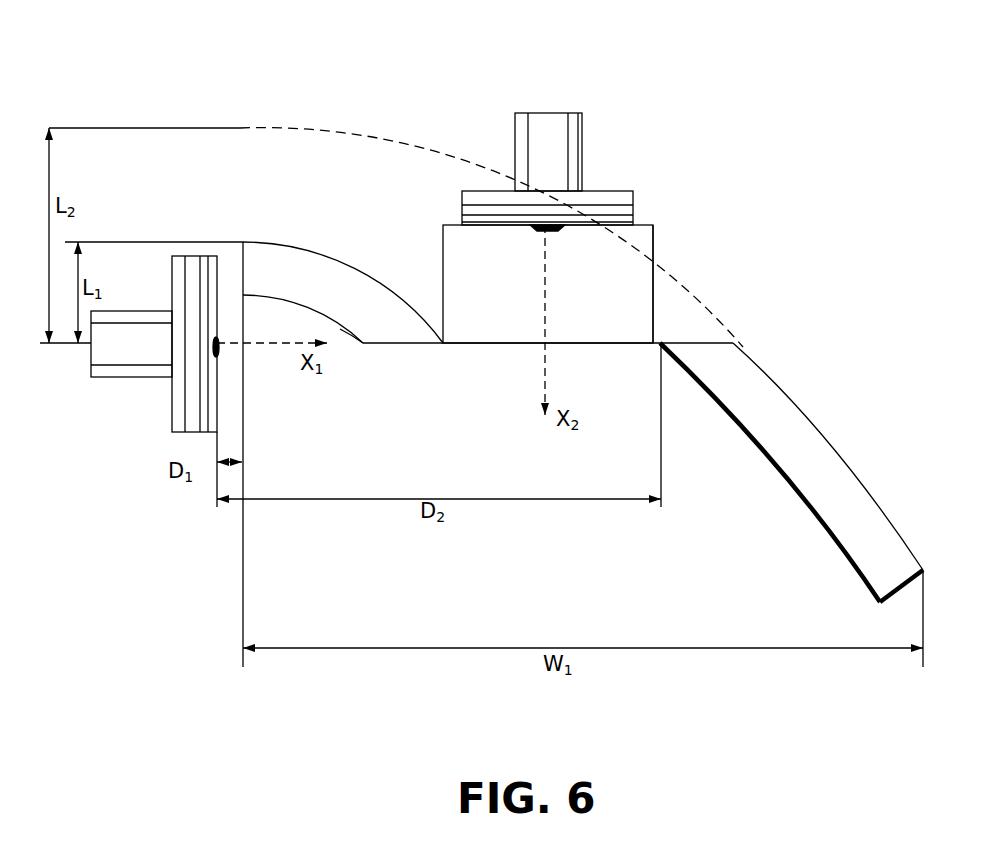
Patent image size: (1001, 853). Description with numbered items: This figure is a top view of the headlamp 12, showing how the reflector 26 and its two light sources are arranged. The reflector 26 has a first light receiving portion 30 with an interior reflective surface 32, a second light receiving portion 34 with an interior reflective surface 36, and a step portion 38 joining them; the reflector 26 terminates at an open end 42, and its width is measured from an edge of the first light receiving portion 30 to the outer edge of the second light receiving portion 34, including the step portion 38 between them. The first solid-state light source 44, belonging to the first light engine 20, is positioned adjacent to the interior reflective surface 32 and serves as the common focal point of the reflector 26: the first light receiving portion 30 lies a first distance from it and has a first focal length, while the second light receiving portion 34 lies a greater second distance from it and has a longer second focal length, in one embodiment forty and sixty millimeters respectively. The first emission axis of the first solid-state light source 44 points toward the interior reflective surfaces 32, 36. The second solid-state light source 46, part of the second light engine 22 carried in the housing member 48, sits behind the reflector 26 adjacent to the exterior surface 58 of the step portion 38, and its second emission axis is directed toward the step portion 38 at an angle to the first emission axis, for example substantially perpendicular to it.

The headlamp 12 is at (118, 34).
The first light engine 20 is at (147, 435).
The second light engine 22 is at (593, 127).
The reflector 26 is at (775, 320).
The first light receiving portion of reflector 30 is at (323, 258).
The interior reflective surface of first light receiving portion 32 is at (345, 333).
The second light receiving portion of reflector 34 is at (808, 417).
The interior reflective surface of second light receiving portion 36 is at (805, 498).
The step portion of reflector 38 is at (498, 345).
The open end of reflector 42 is at (880, 600).
The first solid-state light source 44 is at (218, 352).
The second solid-state light source 46 is at (560, 230).
The housing member 48 is at (657, 268).
The exterior surface of reflector 58 is at (470, 345).